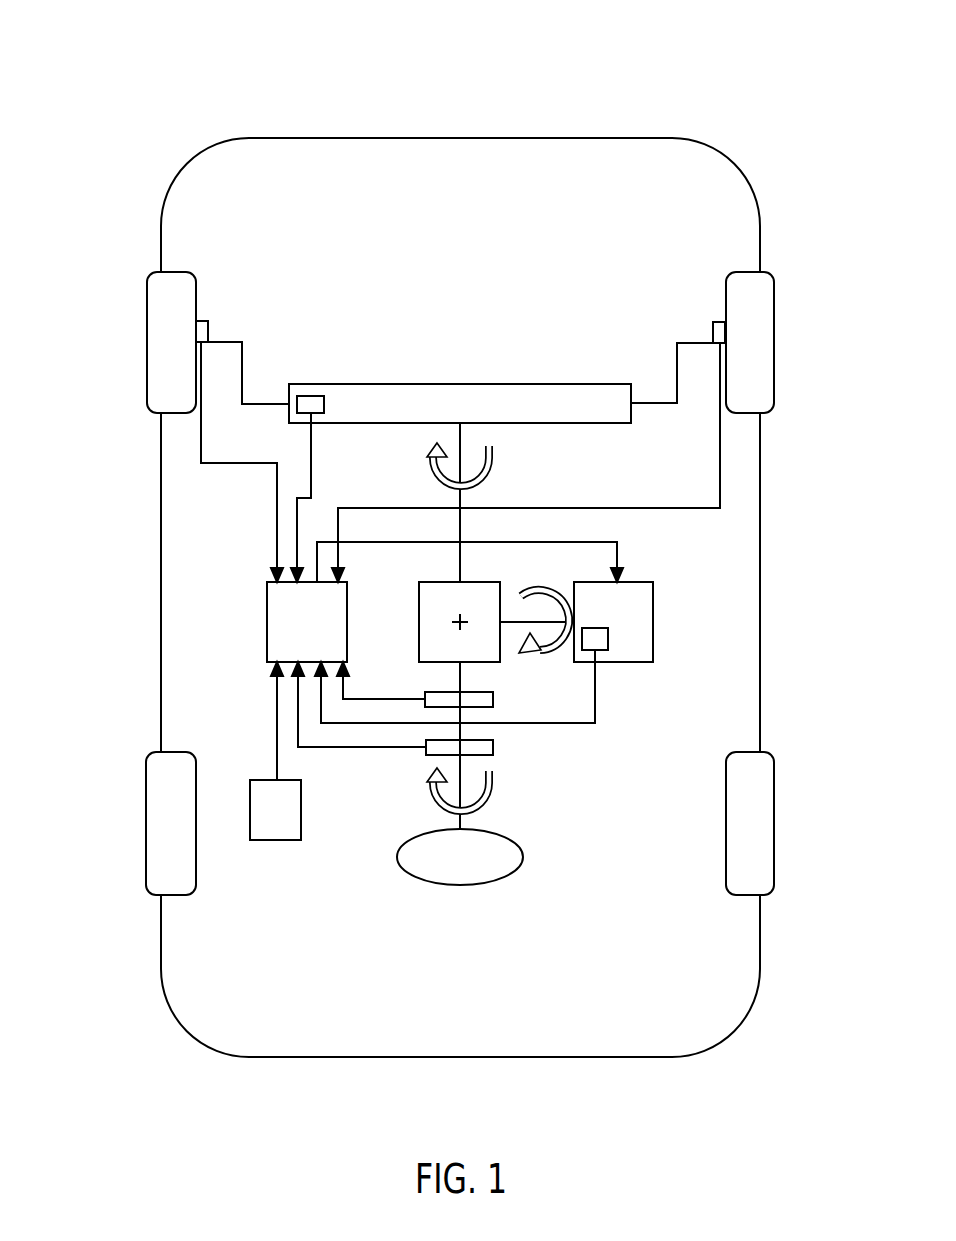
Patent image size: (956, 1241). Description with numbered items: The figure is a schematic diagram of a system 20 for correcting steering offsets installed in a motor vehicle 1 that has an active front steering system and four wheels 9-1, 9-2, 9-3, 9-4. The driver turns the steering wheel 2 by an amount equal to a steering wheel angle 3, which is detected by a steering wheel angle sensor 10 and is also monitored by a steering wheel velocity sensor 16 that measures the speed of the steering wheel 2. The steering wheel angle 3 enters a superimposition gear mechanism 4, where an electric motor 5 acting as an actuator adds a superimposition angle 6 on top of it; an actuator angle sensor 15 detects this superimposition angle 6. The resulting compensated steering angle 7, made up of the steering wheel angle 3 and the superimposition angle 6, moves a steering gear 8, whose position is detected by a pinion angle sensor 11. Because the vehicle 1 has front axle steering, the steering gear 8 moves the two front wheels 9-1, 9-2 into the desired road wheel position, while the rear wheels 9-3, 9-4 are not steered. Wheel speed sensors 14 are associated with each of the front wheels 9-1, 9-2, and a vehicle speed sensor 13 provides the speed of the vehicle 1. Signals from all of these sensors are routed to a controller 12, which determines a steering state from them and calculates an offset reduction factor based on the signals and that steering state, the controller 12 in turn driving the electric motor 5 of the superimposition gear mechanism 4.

The system for correcting steering offsets 20 is at (108, 73).
The motor vehicle 1 is at (664, 151).
The front wheel 9-1 is at (155, 338).
The front wheel 9-2 is at (765, 340).
The wheel 9-3 is at (155, 826).
The wheel 9-4 is at (766, 822).
The wheel speed sensor 14 is at (208, 327).
The steering gear 8 is at (518, 383).
The pinion angle sensor 11 is at (316, 396).
The compensated steering angle 7 is at (487, 467).
The controller 12 is at (273, 611).
The superimposition gear mechanism 4 is at (432, 600).
The superimposition angle 6 is at (530, 597).
The electric motor 5 is at (648, 618).
The actuator angle sensor 15 is at (602, 640).
The steering wheel velocity sensor 16 is at (497, 700).
The steering wheel angle sensor 10 is at (493, 748).
The steering wheel angle 3 is at (487, 792).
The steering wheel 2 is at (523, 847).
The vehicle speed sensor 13 is at (273, 838).